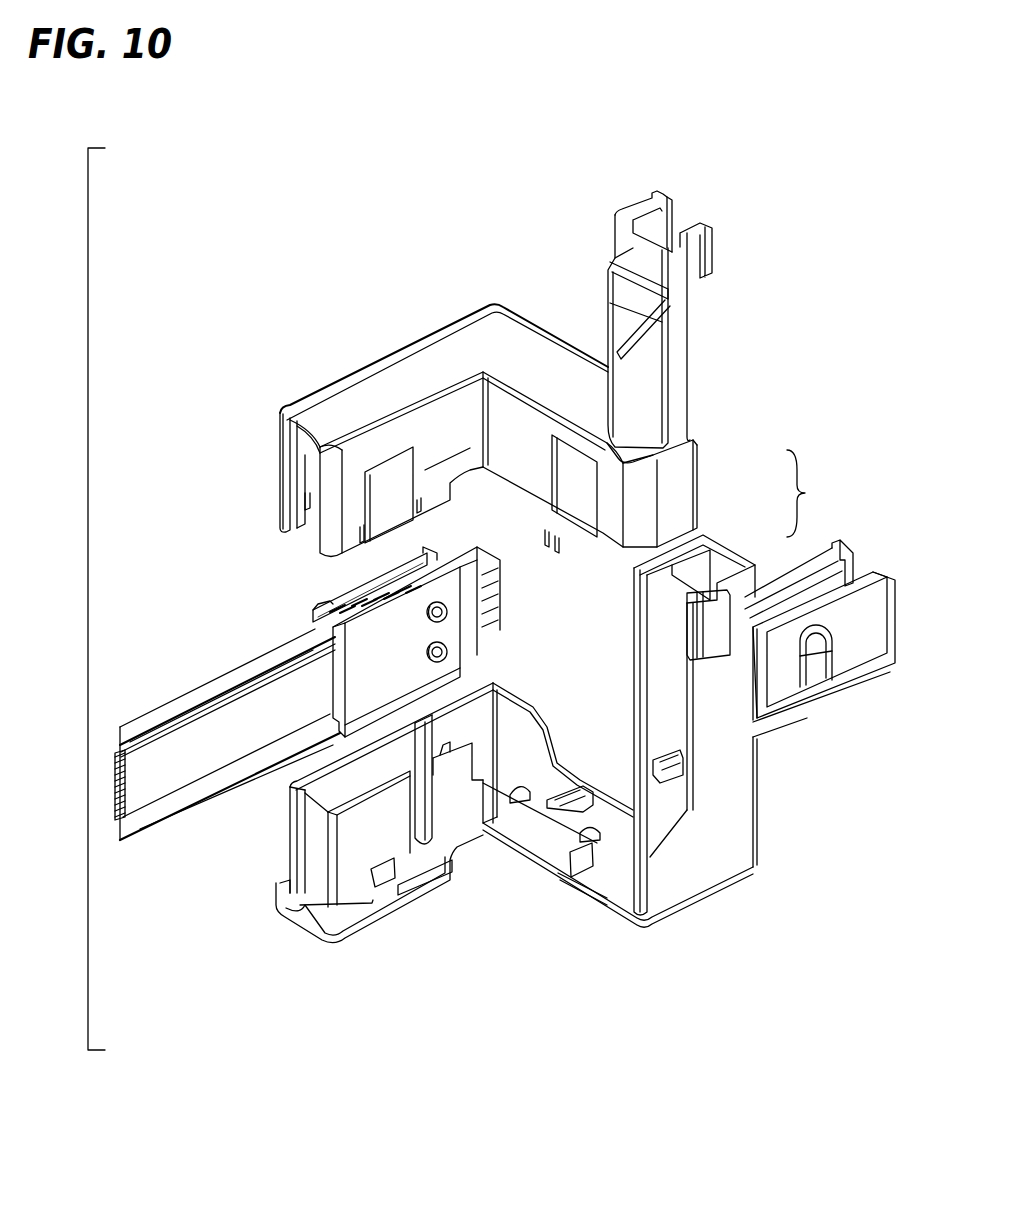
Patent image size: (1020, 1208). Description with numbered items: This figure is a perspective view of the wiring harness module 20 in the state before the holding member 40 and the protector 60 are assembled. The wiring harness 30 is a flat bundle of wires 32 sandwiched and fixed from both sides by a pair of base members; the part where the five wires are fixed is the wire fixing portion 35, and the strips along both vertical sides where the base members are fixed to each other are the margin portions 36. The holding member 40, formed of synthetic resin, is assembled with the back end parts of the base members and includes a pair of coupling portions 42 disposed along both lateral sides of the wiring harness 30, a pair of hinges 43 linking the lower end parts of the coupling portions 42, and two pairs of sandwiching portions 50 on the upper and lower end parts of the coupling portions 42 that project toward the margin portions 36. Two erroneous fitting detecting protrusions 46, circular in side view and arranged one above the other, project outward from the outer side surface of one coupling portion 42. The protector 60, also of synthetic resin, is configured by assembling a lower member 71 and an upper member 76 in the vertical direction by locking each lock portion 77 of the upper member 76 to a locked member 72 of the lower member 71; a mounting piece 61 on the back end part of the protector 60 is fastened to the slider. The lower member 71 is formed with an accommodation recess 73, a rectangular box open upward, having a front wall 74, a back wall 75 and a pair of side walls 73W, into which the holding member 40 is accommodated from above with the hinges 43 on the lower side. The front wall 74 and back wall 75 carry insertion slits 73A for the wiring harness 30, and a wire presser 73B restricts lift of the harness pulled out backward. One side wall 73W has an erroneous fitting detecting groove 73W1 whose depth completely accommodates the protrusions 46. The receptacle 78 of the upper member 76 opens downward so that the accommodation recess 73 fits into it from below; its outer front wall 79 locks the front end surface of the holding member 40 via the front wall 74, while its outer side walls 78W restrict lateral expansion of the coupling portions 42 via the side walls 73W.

The wiring harness module 20 is at (77, 599).
The wiring harness 30 is at (227, 785).
The wires 32 is at (487, 581).
The wire fixing portion 35 is at (145, 767).
The margin portions 36 is at (227, 777).
The holding member 40 is at (378, 658).
The coupling portions 42 is at (448, 596).
The hinges 43 is at (330, 743).
The erroneous fitting detecting protrusions 46 is at (445, 614).
The sandwiching portions 50 is at (410, 557).
The protector 60 is at (548, 607).
The mounting piece 61 is at (853, 620).
The lower member 71 is at (719, 570).
The locked member 72 is at (385, 882).
The accommodation recess 73 is at (504, 848).
The insertion slits 73A is at (305, 853).
The wire presser 73B is at (557, 807).
The side walls 73W is at (387, 767).
The erroneous fitting detecting groove 73W1 is at (435, 795).
The front wall 74 is at (293, 836).
The back wall 75 is at (445, 722).
The upper member 76 is at (673, 478).
The lock portion 77 is at (385, 490).
The receptacle 78 is at (475, 398).
The outer side walls 78W is at (447, 427).
The outer front wall 79 is at (285, 487).